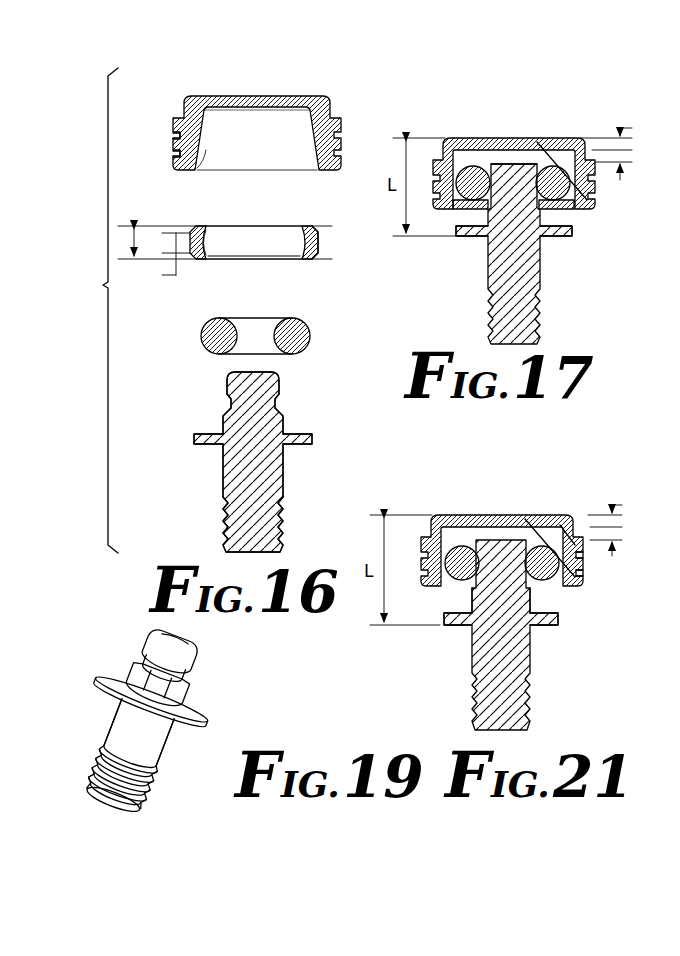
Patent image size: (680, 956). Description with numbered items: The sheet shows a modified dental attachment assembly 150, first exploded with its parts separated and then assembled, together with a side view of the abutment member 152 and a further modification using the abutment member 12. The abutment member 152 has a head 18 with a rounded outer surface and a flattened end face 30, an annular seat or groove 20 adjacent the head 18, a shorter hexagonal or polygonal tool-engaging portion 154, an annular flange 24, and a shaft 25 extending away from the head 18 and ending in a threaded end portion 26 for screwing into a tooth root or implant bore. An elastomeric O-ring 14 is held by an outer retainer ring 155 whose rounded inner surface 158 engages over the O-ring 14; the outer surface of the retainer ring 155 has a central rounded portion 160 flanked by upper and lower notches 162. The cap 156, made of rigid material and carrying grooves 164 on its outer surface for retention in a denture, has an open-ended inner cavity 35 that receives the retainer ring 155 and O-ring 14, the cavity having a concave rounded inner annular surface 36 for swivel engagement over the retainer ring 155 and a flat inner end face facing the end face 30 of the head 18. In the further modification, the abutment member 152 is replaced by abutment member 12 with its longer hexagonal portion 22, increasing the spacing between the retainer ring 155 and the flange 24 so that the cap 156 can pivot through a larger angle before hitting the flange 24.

In FIG. 21, the abutment member 12 is at (542, 649).
In FIG. 16, the elastomeric ring 14 is at (300, 319).
In FIG. 17, the elastomeric ring 14 is at (600, 178).
In FIG. 21, the elastomeric ring 14 is at (533, 547).
In FIG. 16, the head 18 is at (279, 374).
In FIG. 19, the head 18 is at (182, 652).
In FIG. 16, the annular seat or groove 20 is at (281, 394).
In FIG. 19, the annular seat or groove 20 is at (150, 655).
In FIG. 21, the hexagonal portion 22 is at (531, 598).
In FIG. 16, the annular flange 24 is at (313, 438).
In FIG. 17, the annular flange 24 is at (572, 236).
In FIG. 21, the annular flange 24 is at (560, 623).
In FIG. 19, the annular flange 24 is at (208, 724).
In FIG. 16, the shaft 25 is at (284, 480).
In FIG. 19, the shaft 25 is at (118, 738).
In FIG. 16, the threaded end portion 26 is at (284, 521).
In FIG. 19, the threaded end portion 26 is at (140, 801).
In FIG. 16, the flattened end face 30 is at (246, 372).
In FIG. 17, the flattened end face 30 is at (514, 162).
In FIG. 19, the flattened end face 30 is at (175, 634).
In FIG. 16, the inner cavity 35 is at (270, 139).
In FIG. 16, the concave rounded inner annular surface 36 is at (206, 152).
In FIG. 16, the dental attachment assembly 150 is at (92, 310).
In FIG. 16, the abutment member 152 is at (222, 474).
In FIG. 17, the abutment member 152 is at (541, 262).
In FIG. 19, the abutment member 152 is at (178, 757).
In FIG. 16, the tool-engaging portion 154 is at (284, 420).
In FIG. 19, the tool-engaging portion 154 is at (184, 698).
In FIG. 16, the retainer ring 155 is at (321, 250).
In FIG. 17, the retainer ring 155 is at (574, 204).
In FIG. 16, the cap 156 is at (250, 95).
In FIG. 17, the cap 156 is at (541, 139).
In FIG. 21, the cap 156 is at (470, 515).
In FIG. 16, the rounded inner surface 158 is at (210, 246).
In FIG. 16, the central rounded portion 160 is at (320, 241).
In FIG. 16, the notches 162 is at (313, 257).
In FIG. 21, the notches 162 is at (568, 541).
In FIG. 16, the grooves 164 is at (173, 156).
In FIG. 21, the grooves 164 is at (584, 574).